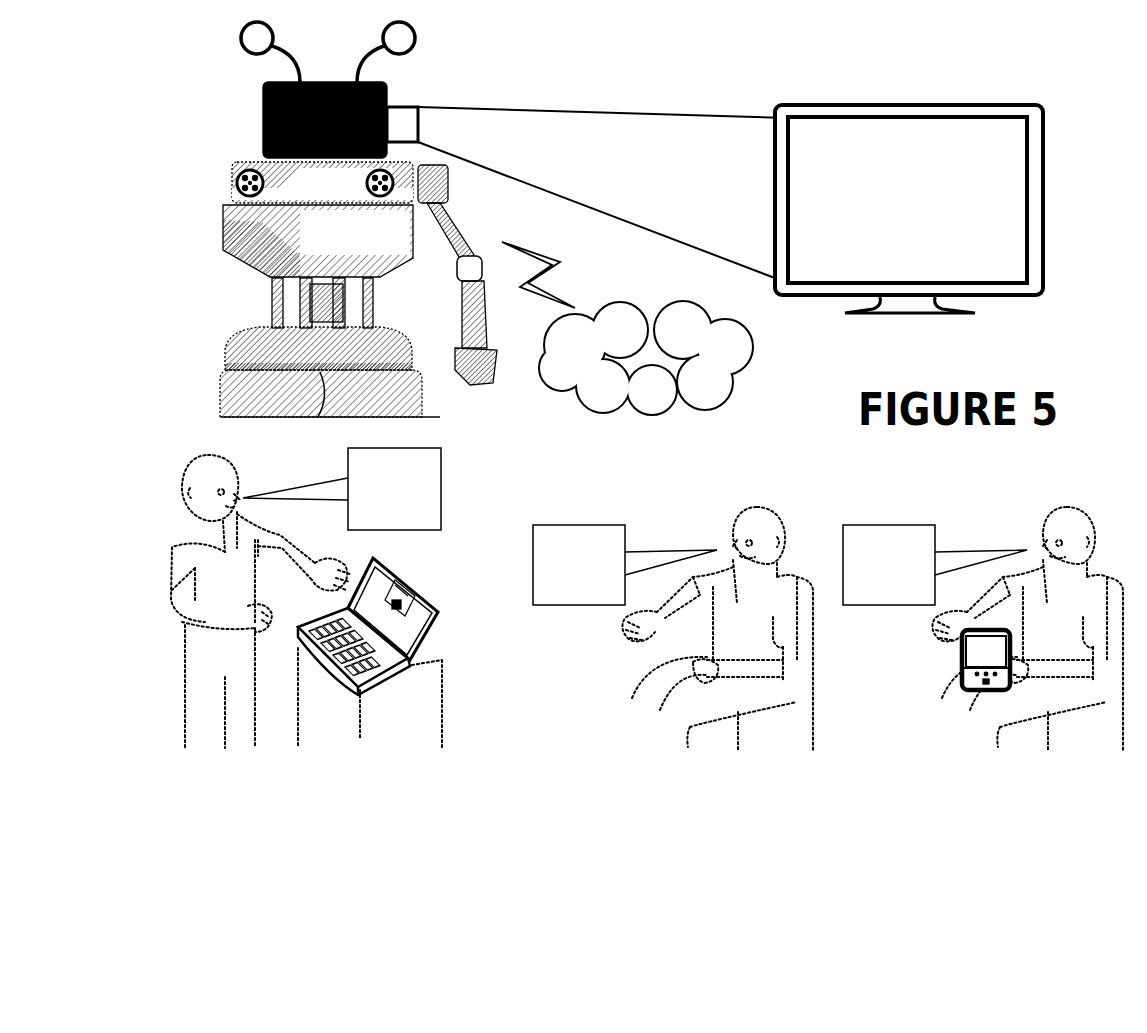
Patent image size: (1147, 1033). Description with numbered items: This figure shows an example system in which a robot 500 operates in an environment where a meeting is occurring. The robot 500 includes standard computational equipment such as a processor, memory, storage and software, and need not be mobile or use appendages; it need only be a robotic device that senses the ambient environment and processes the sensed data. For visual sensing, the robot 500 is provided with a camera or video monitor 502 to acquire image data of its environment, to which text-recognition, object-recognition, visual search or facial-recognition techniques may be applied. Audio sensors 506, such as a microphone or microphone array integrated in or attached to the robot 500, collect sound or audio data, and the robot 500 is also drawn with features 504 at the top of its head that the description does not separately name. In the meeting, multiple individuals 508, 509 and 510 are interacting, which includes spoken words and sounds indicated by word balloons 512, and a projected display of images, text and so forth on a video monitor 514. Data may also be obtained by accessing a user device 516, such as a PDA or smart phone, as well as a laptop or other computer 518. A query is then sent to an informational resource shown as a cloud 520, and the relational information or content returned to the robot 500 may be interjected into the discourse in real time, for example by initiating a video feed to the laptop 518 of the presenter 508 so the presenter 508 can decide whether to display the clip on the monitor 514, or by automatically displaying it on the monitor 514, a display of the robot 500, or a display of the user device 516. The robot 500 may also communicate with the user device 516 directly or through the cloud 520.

The robot 500 is at (228, 96).
The camera or video monitor 502 is at (407, 108).
The antennae 504 is at (418, 35).
The audio sensors 506 is at (236, 181).
The individual (presenter) 508 is at (240, 468).
The individual 509 is at (756, 493).
The individual 510 is at (1011, 534).
The word balloons 512 is at (573, 605).
The video monitor 514 is at (1043, 200).
The user device 516 is at (962, 661).
The laptop or other computer 518 is at (432, 630).
The cloud 520 is at (646, 358).